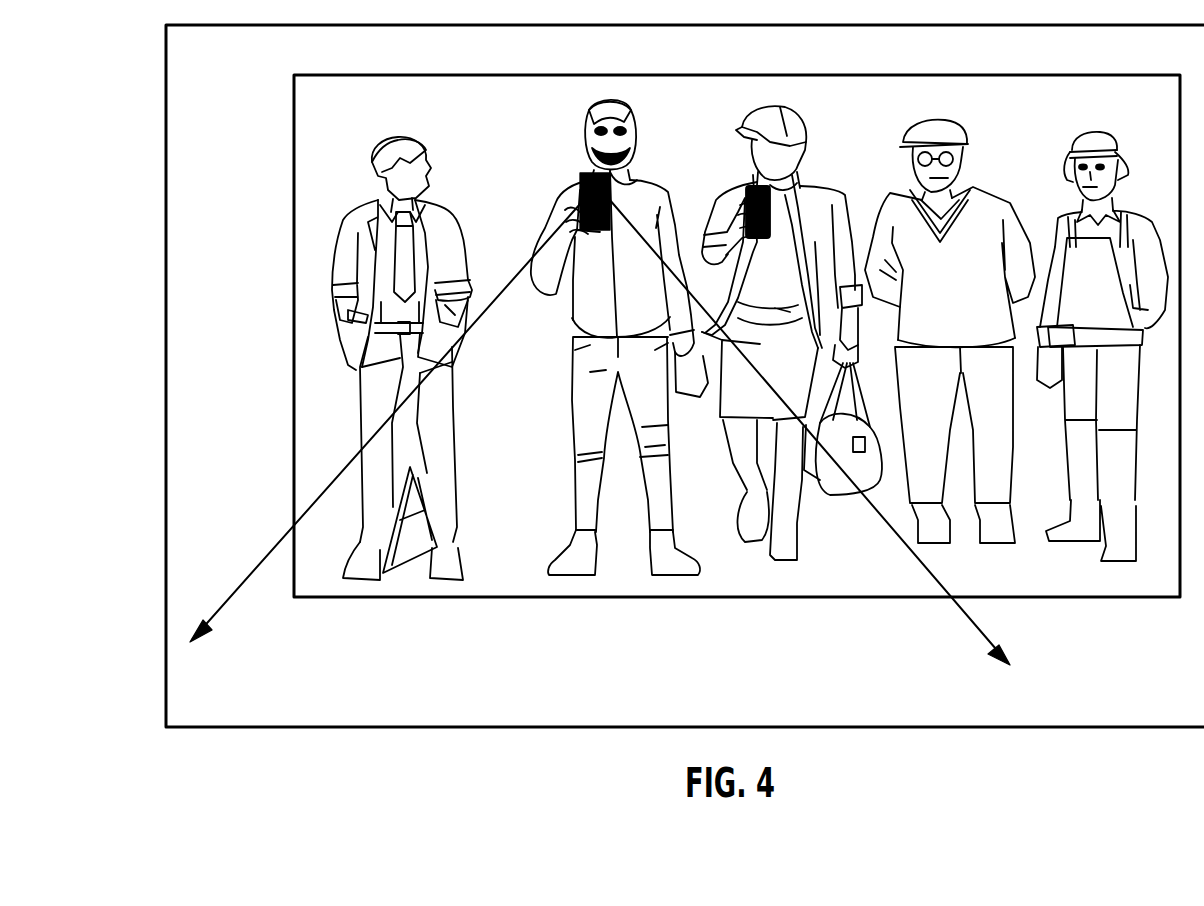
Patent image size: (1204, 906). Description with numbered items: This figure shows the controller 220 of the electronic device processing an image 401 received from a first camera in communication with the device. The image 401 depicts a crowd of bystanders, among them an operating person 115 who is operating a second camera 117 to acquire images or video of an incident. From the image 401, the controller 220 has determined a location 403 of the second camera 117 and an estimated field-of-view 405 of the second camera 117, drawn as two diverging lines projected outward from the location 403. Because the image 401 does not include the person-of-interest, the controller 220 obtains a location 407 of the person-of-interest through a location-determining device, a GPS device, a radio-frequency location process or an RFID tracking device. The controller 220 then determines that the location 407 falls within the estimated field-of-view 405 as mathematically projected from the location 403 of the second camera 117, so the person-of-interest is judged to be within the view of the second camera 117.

The controller 220 is at (165, 375).
The image 401 is at (293, 336).
The location of the second camera 403 is at (587, 174).
The second camera 117 is at (574, 188).
The operating person 115 is at (610, 337).
The estimated field-of-view 405 is at (275, 545).
The location of the person-of-interest 407 is at (857, 657).